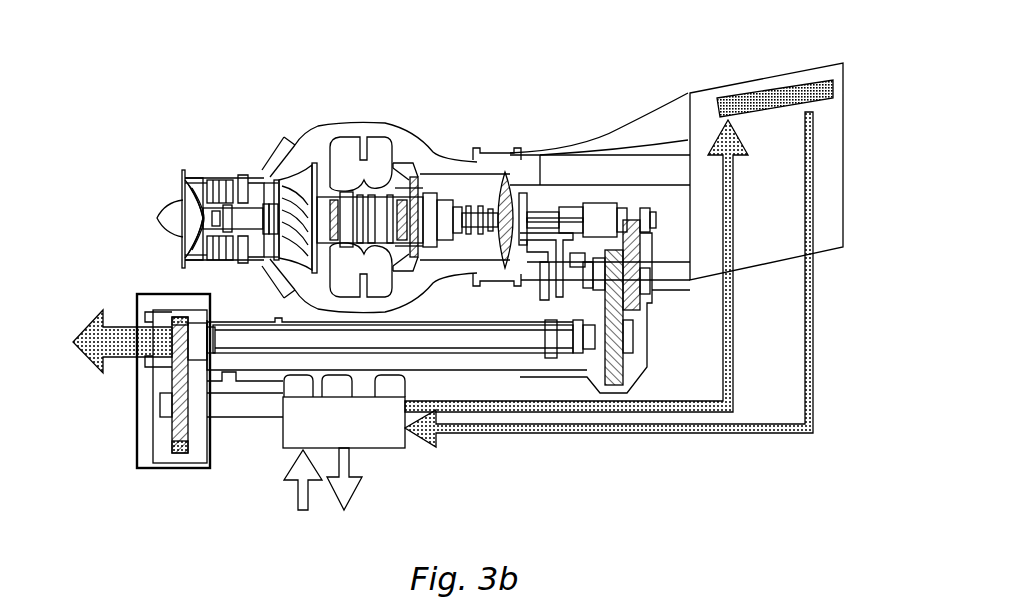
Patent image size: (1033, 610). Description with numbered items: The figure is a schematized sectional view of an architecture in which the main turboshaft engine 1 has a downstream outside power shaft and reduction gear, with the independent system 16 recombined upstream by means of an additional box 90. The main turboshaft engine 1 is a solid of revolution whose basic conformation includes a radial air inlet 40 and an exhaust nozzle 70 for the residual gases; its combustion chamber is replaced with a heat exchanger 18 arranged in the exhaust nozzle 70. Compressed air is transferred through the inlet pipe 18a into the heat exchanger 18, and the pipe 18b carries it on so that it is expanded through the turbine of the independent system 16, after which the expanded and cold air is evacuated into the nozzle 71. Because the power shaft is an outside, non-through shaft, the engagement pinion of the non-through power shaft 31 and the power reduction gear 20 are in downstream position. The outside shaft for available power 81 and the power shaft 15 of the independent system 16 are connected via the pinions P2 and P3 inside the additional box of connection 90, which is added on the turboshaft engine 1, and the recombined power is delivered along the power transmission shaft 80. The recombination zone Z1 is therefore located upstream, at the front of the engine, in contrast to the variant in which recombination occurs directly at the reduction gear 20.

The main turboshaft engine 1 is at (480, 108).
The power shaft 15 is at (255, 398).
The independent system 16 is at (344, 411).
The heat exchanger 18 is at (755, 95).
The inlet pipe 18a is at (735, 335).
The pipe 18b is at (814, 370).
The power reduction gear 20 is at (648, 284).
The non-through power shaft 31 is at (558, 222).
The radial air inlet 40 is at (303, 495).
The exhaust nozzle 70 is at (783, 204).
The nozzle 71 is at (344, 494).
The power transmission shaft 80 is at (122, 335).
The outside power shaft 81 is at (520, 345).
The additional box 90 is at (165, 384).
The pinion P2 is at (176, 318).
The pinion P3 is at (190, 440).
The recombination zone Z1 is at (137, 455).